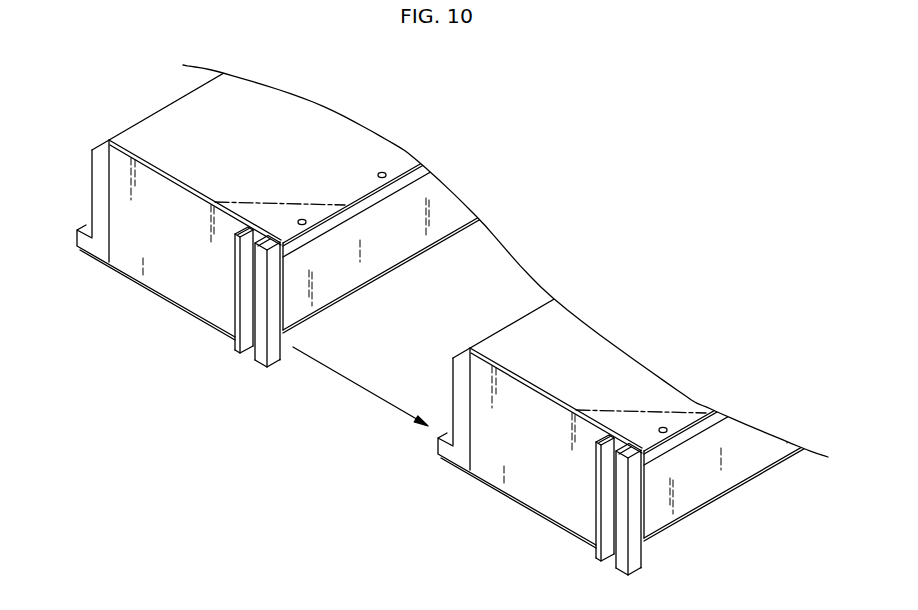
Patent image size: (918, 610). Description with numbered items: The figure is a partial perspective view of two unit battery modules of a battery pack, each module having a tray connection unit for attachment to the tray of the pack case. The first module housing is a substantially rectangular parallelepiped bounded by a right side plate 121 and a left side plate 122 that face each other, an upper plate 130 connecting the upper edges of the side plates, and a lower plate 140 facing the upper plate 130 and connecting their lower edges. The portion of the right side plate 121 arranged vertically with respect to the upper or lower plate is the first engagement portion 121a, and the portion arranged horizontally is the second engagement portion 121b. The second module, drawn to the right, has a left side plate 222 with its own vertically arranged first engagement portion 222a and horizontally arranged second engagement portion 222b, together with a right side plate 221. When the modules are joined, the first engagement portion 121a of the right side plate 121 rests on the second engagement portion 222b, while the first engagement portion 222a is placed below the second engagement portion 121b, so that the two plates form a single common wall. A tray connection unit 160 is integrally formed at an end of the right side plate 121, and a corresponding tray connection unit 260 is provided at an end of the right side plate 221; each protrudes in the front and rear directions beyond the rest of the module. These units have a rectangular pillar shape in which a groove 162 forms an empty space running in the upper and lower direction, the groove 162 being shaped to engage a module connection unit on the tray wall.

The right side plate 121 is at (391, 231).
The first engagement portion 121a is at (385, 250).
The second engagement portion 121b is at (393, 187).
The left side plate 122 is at (79, 167).
The upper plate 130 is at (162, 125).
The lower plate 140 is at (120, 272).
The tray connection unit 160 is at (214, 309).
The groove 162 is at (252, 296).
The right side plate 221 is at (712, 503).
The left side plate 222 is at (473, 448).
The first engagement portion 222a is at (458, 376).
The second engagement portion 222b is at (444, 450).
The tray connection unit 260 is at (582, 577).